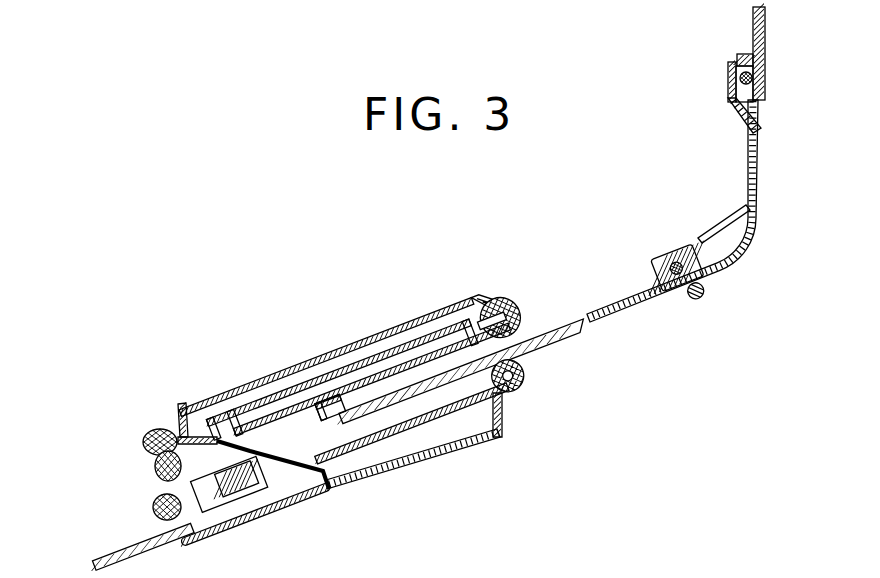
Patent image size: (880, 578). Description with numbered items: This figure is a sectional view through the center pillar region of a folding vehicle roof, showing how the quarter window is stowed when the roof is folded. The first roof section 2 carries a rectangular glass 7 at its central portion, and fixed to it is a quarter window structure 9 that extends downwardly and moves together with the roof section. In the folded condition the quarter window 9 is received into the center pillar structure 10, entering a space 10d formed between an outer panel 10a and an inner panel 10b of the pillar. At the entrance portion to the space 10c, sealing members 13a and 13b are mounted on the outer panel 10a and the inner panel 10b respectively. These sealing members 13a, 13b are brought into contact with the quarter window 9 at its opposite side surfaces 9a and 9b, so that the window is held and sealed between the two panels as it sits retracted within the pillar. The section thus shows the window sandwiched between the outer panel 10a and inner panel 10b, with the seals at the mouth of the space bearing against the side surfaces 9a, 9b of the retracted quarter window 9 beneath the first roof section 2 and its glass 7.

The rectangular glass 7 is at (755, 30).
The first roof section 2 is at (755, 204).
The center pillar structure 10 is at (460, 289).
The sealing member 13b is at (511, 298).
The quarter window structure 9 is at (562, 318).
The sealing member 13a is at (527, 378).
The inner panel 10b is at (357, 398).
The space 10c is at (287, 427).
The side surface 9b is at (352, 425).
The side surface 9a is at (405, 402).
The space 10d is at (508, 412).
The outer panel 10a is at (450, 448).